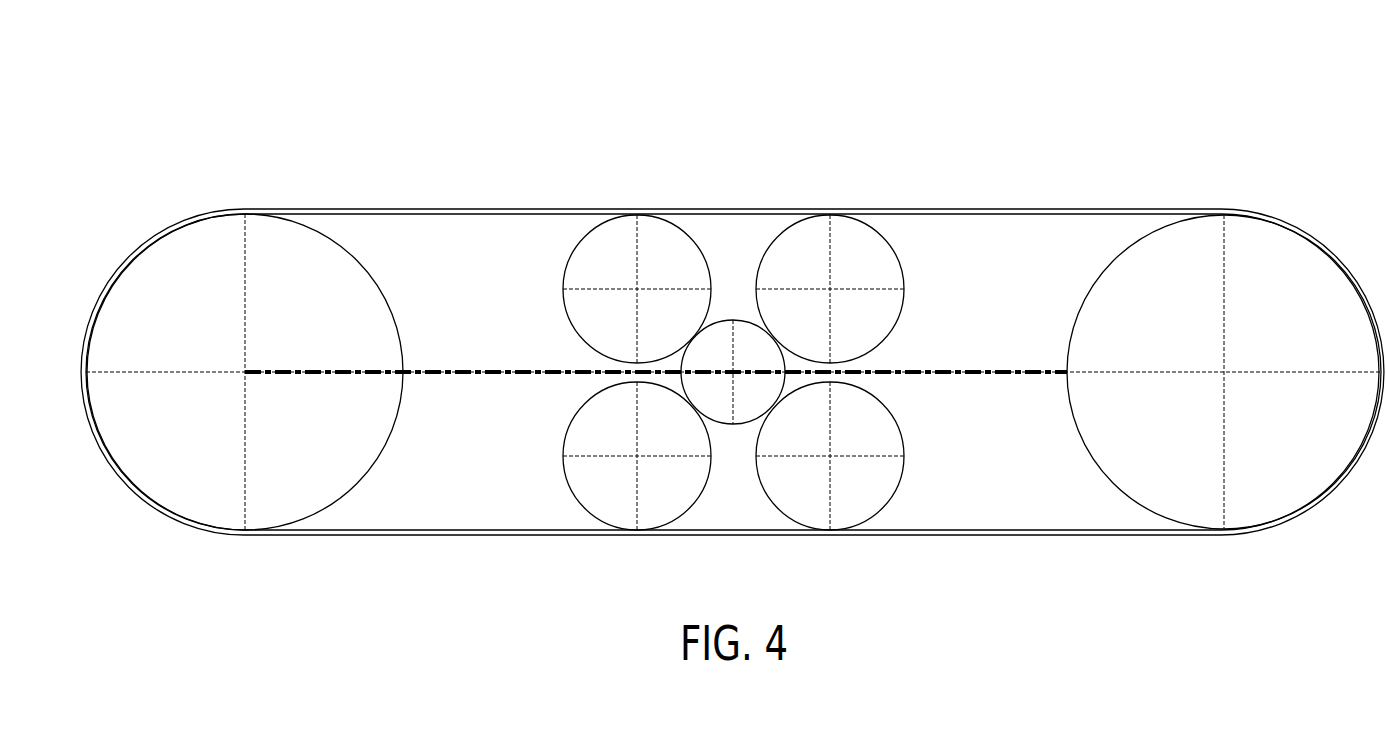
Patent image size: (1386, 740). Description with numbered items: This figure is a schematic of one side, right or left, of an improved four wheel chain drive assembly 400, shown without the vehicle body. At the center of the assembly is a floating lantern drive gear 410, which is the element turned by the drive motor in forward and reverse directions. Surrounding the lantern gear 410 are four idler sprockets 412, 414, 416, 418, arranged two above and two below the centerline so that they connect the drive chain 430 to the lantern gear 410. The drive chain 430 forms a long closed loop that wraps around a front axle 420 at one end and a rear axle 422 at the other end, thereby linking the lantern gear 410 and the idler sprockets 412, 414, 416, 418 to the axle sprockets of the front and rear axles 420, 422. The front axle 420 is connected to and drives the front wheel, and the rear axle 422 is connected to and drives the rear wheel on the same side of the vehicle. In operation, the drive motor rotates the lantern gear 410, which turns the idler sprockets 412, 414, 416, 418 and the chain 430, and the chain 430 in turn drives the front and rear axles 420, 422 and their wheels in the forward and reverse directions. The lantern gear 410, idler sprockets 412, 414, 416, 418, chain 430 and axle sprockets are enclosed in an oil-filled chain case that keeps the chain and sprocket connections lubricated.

The improved four wheel chain drive assembly 400 is at (408, 115).
The floating lantern drive gear 410 is at (726, 318).
The idler sprocket 412 is at (607, 232).
The idler sprocket 414 is at (855, 233).
The idler sprocket 416 is at (858, 508).
The idler sprocket 418 is at (615, 512).
The front axle 420 is at (165, 258).
The rear axle 422 is at (1298, 253).
The drive chain 430 is at (388, 209).